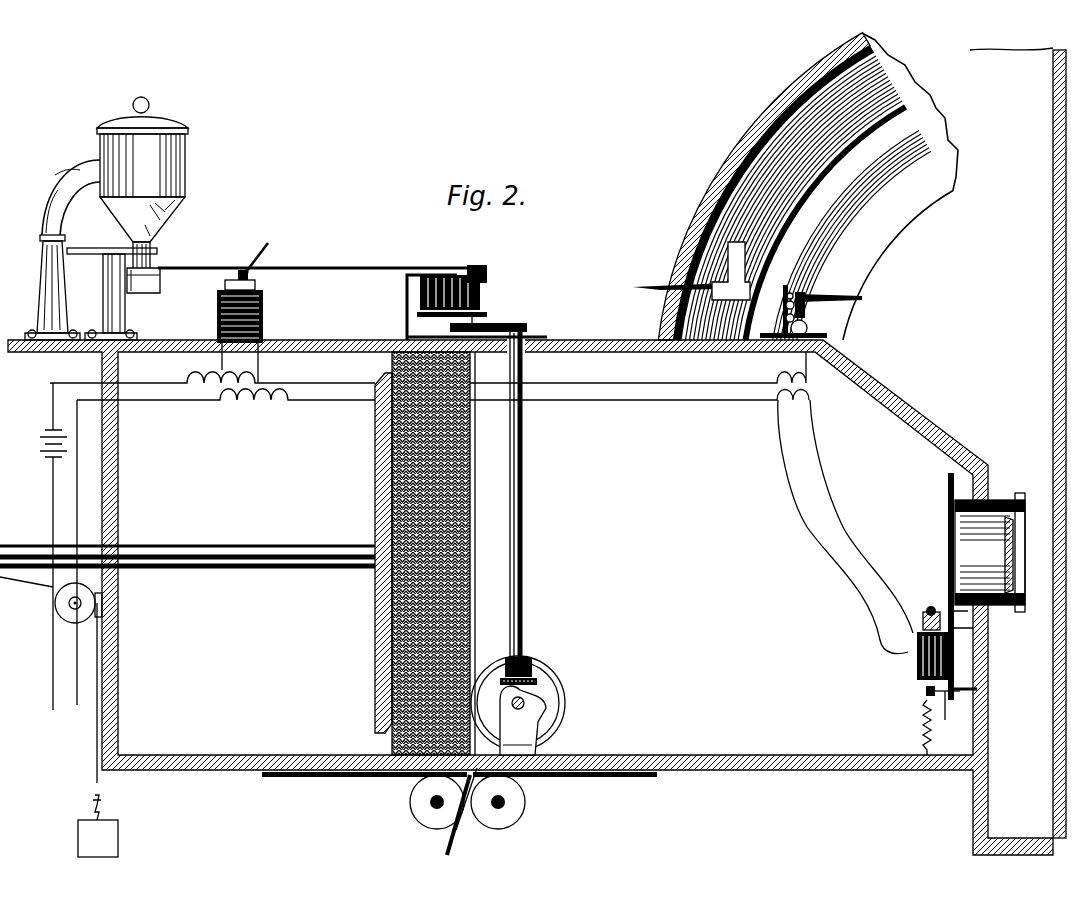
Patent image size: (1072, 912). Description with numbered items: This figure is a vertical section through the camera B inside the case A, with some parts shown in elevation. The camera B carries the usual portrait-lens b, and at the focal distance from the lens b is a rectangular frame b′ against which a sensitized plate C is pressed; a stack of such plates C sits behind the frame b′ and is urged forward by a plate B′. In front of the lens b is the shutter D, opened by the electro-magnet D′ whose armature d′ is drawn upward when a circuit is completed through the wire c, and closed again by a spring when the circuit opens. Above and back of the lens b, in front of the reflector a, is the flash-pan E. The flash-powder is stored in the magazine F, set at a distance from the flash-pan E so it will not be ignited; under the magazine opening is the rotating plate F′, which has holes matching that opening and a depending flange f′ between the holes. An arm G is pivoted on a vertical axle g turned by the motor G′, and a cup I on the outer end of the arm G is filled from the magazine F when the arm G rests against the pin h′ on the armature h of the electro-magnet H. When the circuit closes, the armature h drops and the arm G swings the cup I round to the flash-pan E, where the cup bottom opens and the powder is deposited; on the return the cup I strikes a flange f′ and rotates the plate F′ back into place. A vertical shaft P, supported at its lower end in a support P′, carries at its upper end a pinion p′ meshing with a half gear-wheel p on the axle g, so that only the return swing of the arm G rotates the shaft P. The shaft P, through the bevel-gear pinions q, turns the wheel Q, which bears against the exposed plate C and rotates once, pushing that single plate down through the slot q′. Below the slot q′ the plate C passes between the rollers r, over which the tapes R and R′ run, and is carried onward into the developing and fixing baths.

The case A is at (1053, 236).
The reflector a is at (808, 186).
The camera B is at (118, 636).
The plate B′ is at (375, 483).
The portrait-lens b is at (1005, 607).
The rectangular frame b′ is at (476, 362).
The sensitized plate C is at (470, 475).
The circuit-wire c is at (865, 557).
The shutter D is at (948, 483).
The electro-magnet D′ is at (917, 656).
The armature d′ is at (926, 691).
The flash-pan E is at (865, 298).
The magazine F is at (183, 162).
The rotating plate F′ is at (152, 252).
The depending flange f′ is at (80, 254).
The arm G is at (345, 266).
The motor G′ is at (407, 302).
The vertical axle g is at (487, 288).
The electro-magnet H is at (263, 311).
The armature h is at (268, 257).
The pin h′ is at (249, 269).
The cup I is at (160, 289).
The vertical shaft P is at (523, 475).
The support P′ is at (548, 695).
The half gear-wheel p is at (487, 315).
The pinion p′ is at (527, 328).
The wheel Q is at (563, 735).
The bevel-gear pinions q is at (540, 680).
The slot q′ is at (462, 811).
The tape R is at (583, 779).
The tape R′ is at (318, 780).
The rollers r is at (415, 815).